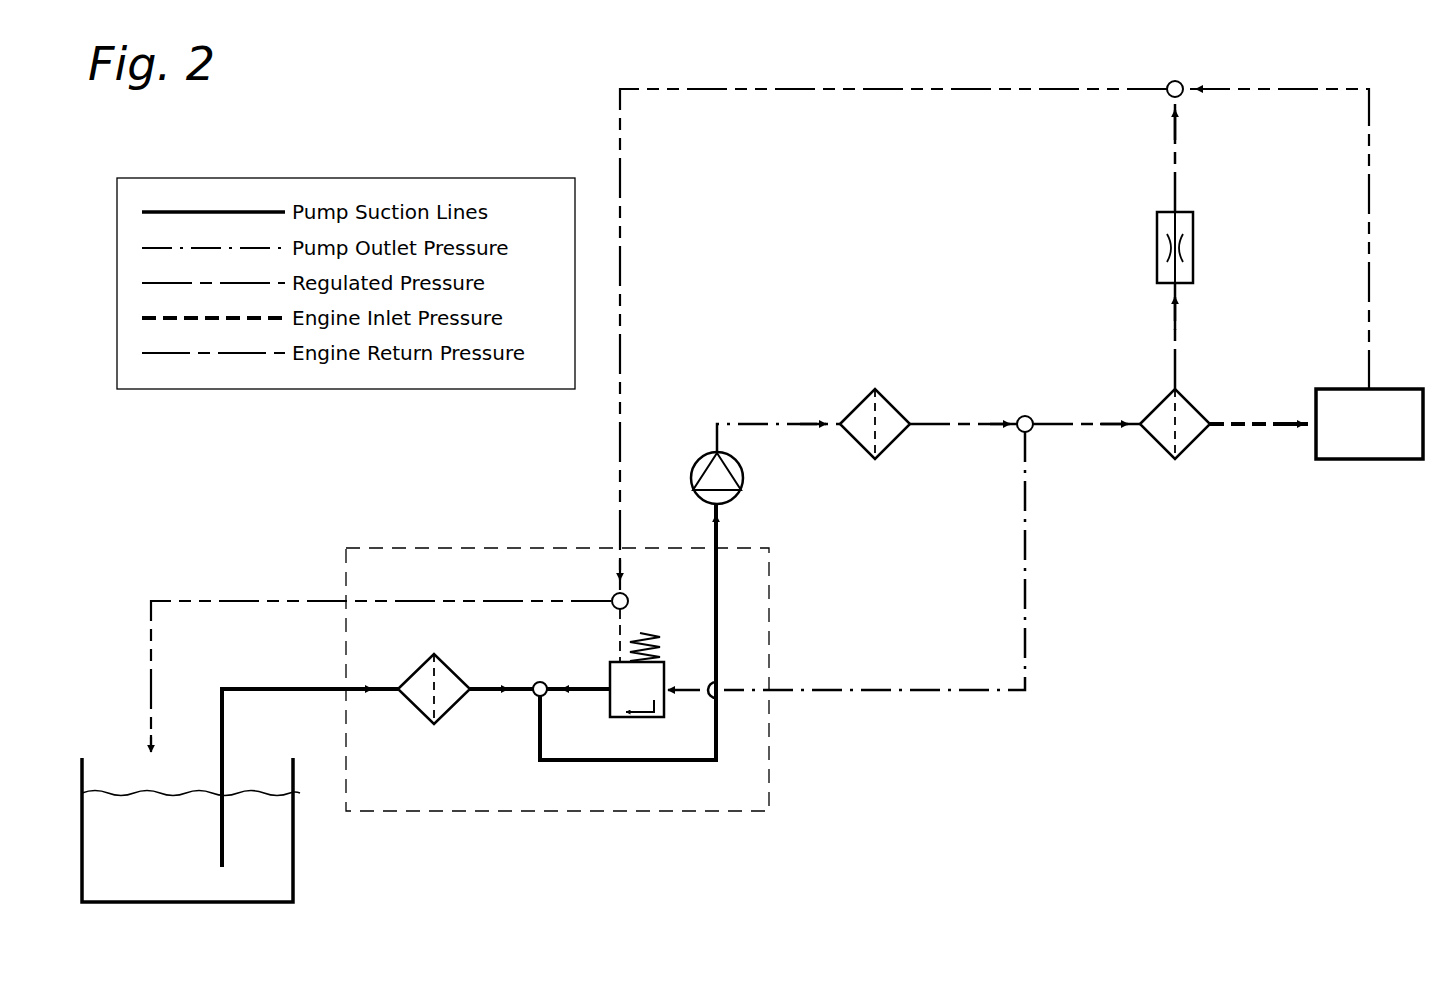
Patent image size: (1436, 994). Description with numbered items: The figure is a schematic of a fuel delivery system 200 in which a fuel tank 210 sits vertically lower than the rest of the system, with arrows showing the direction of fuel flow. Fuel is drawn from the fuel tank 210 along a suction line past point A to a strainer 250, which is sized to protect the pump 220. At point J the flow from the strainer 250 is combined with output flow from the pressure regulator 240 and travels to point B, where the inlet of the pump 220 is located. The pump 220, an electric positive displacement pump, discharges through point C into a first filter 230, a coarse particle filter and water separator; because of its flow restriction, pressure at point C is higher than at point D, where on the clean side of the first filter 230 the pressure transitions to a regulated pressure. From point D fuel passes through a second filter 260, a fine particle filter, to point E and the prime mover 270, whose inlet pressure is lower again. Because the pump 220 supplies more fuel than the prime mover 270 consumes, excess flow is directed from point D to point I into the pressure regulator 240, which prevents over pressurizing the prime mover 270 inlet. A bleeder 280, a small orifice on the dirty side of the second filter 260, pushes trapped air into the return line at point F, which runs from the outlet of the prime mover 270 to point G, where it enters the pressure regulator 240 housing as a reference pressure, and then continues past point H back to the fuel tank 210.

The fuel delivery system 200 is at (1074, 770).
The fuel tank 210 is at (293, 865).
The pump 220 is at (712, 452).
The first filter 230 is at (865, 396).
The pressure regulator 240 is at (635, 720).
The strainer 250 is at (432, 723).
The second filter 260 is at (1165, 450).
The prime mover 270 is at (1343, 388).
The bleeder 280 is at (1157, 226).
The point A is at (325, 688).
The point B is at (718, 541).
The point C is at (810, 420).
The point D is at (1032, 417).
The point E is at (1232, 420).
The point F is at (1181, 82).
The point G is at (626, 593).
The point H is at (340, 601).
The point I is at (780, 692).
The point J is at (545, 682).